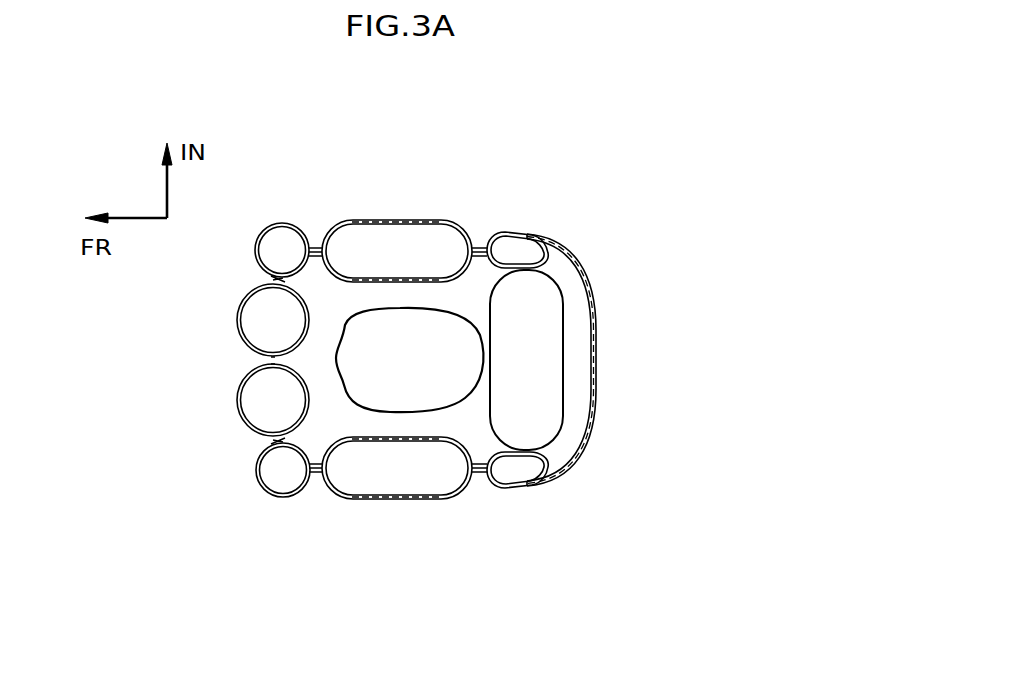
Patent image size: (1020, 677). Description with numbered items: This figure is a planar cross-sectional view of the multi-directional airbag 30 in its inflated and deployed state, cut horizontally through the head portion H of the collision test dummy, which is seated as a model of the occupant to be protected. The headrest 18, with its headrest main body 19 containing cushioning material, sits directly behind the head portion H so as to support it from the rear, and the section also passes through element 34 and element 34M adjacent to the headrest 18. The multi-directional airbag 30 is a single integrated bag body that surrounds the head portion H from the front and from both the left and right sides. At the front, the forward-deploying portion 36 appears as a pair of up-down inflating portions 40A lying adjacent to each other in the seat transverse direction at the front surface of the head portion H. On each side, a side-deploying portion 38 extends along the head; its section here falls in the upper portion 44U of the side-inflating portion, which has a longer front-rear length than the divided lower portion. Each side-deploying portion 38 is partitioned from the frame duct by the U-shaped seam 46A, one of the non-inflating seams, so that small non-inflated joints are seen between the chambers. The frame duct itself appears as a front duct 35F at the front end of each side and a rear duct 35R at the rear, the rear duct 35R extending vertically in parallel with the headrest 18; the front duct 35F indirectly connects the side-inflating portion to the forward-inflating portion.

The multi-directional airbag 30 is at (645, 158).
The forward-deploying portion 36 is at (233, 413).
The front duct 35F is at (282, 236).
The up-down inflating portion 40A is at (253, 324).
The side-deploying portion 38 is at (433, 138).
The upper portion of side-inflating portion 44U is at (382, 220).
The U-shaped seam 46A is at (318, 246).
The rear duct 35R is at (508, 232).
The headrest 18 is at (705, 252).
The headrest main body 19 is at (542, 312).
The side portion of seat back 34 is at (600, 328).
The seat back side member 34M is at (598, 386).
The head portion H is at (462, 376).